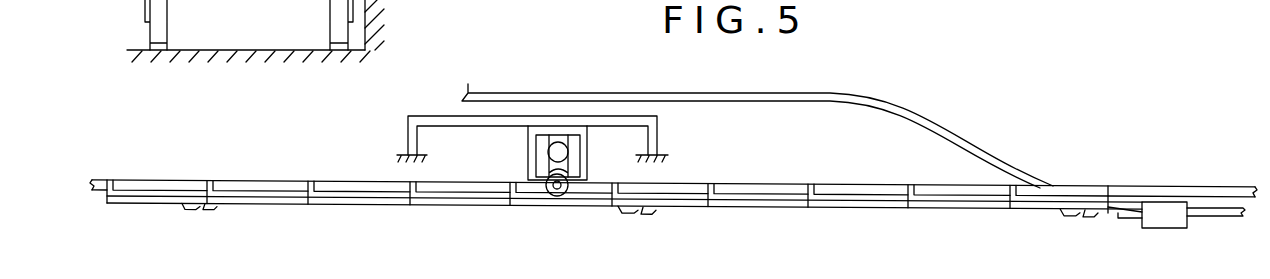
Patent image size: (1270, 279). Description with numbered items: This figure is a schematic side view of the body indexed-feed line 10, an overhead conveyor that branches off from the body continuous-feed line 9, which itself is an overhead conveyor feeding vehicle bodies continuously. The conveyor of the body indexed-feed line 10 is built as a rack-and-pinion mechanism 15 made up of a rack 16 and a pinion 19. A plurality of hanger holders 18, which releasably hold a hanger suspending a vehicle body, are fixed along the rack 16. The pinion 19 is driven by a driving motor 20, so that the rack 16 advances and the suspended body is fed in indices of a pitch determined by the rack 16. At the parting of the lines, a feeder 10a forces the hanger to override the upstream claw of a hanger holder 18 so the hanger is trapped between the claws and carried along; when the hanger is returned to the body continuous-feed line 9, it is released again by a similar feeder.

The body continuous-feed line 9 is at (1223, 217).
The body indexed-feed line 10 is at (397, 203).
The feeder 10a is at (1152, 222).
The rack-and-pinion mechanism 15 is at (562, 213).
The rack 16 is at (800, 208).
The hanger holder 18 is at (642, 209).
The pinion 19 is at (546, 187).
The driving motor 20 is at (559, 146).